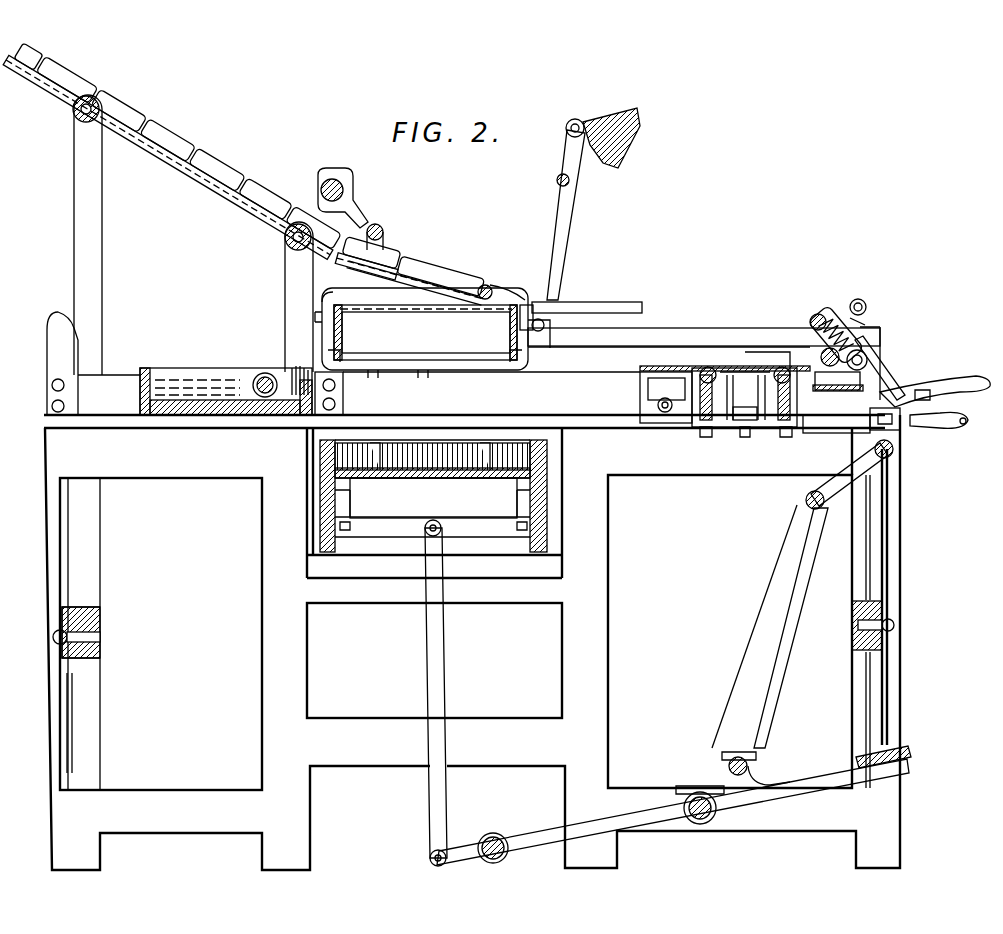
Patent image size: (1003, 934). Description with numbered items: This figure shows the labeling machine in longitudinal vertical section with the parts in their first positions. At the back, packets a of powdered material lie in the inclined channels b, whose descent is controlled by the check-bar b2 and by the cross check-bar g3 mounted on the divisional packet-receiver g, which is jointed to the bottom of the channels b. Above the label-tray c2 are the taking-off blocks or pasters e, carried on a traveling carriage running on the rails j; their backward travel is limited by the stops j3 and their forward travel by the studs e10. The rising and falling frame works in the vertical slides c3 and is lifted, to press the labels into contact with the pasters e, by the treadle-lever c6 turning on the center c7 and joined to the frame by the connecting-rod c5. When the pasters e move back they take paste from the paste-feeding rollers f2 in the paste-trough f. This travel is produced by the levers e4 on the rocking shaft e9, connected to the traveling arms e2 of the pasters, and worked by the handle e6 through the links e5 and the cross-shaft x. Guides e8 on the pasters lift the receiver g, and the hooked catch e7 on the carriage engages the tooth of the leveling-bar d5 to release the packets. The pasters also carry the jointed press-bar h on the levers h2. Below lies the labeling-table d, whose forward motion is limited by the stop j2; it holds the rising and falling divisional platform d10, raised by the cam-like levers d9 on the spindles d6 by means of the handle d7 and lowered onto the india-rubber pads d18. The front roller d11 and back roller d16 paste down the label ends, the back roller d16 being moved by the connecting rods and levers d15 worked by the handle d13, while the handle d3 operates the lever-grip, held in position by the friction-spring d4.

The packets a is at (116, 103).
The inclined channels b is at (172, 152).
The check-bar b2 is at (348, 197).
The divisional packet-receiver g is at (454, 272).
The cross check-bar g3 is at (380, 228).
The press-bar h is at (612, 138).
The levers h2 is at (566, 209).
The taking-off blocks or pasters e is at (421, 329).
The traveling arms e2 is at (704, 329).
The levers e4 is at (782, 626).
The links e5 is at (869, 597).
The handle e6 is at (892, 456).
The hooked catch e7 is at (533, 306).
The guides e8 is at (336, 290).
The rocking shaft e9 is at (752, 766).
The studs e10 is at (410, 385).
The cross-shaft x is at (805, 500).
The paste-trough f is at (170, 370).
The paste-feeding rollers f2 is at (258, 375).
The basements or rails j is at (359, 390).
The stop j2 is at (339, 393).
The stops j3 is at (60, 349).
The divisional label-tray c2 is at (430, 474).
The vertical slides c3 is at (318, 434).
The connecting-rod c5 is at (472, 662).
The treadle-lever c6 is at (588, 830).
The center c7 is at (718, 812).
The labeling-table d is at (669, 356).
The handle d3 is at (866, 310).
The friction-spring d4 is at (866, 325).
The leveling-bar d5 is at (820, 316).
The spindles d6 is at (840, 432).
The handle d7 is at (950, 428).
The cam-like levers d9 is at (723, 428).
The rising and falling divisional platform d10 is at (745, 368).
The front roller d11 is at (785, 368).
The handle d13 is at (950, 376).
The connecting rods and levers d15 is at (864, 363).
The back roller d16 is at (668, 378).
The india-rubber pads d18 is at (748, 422).